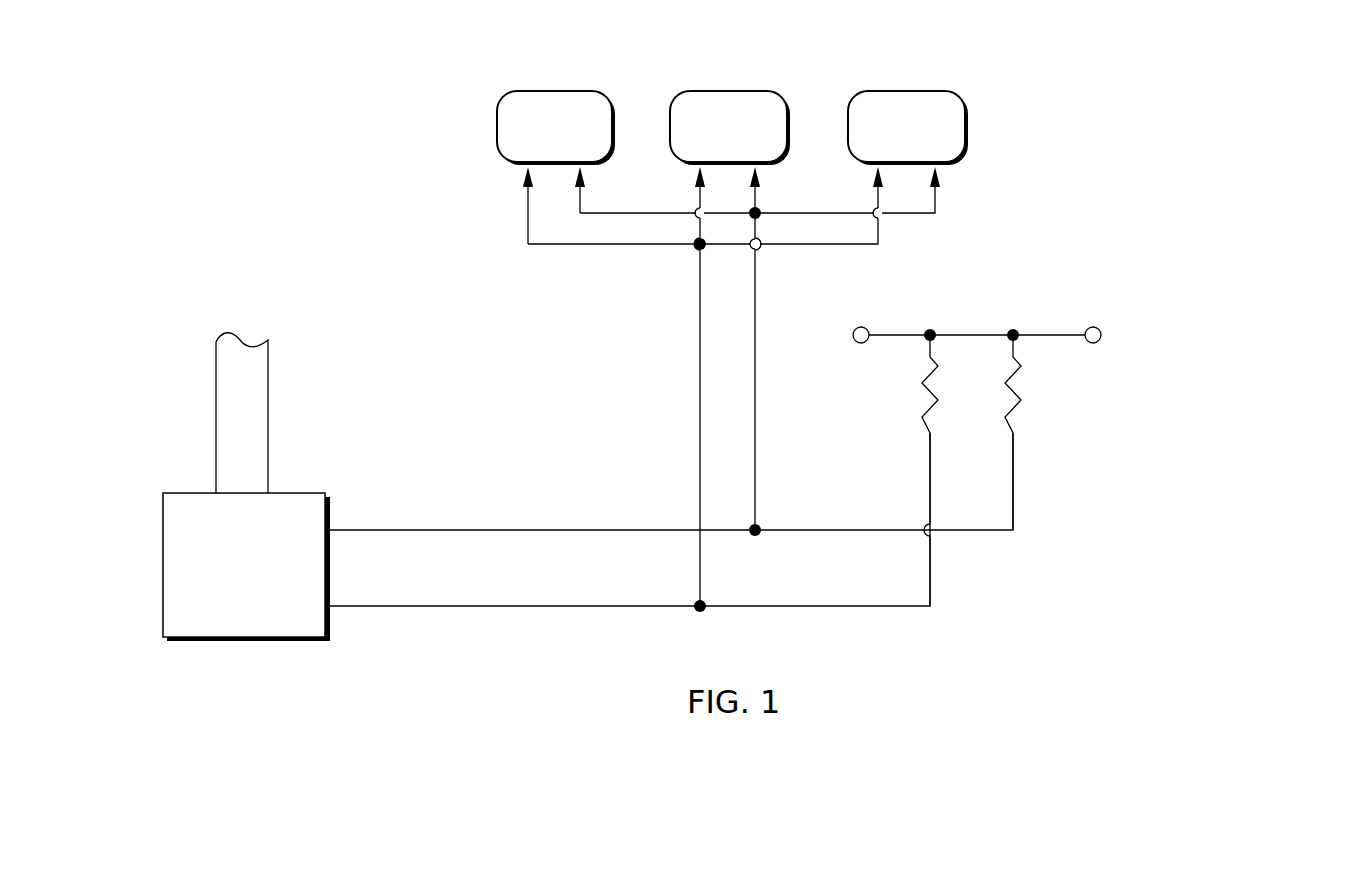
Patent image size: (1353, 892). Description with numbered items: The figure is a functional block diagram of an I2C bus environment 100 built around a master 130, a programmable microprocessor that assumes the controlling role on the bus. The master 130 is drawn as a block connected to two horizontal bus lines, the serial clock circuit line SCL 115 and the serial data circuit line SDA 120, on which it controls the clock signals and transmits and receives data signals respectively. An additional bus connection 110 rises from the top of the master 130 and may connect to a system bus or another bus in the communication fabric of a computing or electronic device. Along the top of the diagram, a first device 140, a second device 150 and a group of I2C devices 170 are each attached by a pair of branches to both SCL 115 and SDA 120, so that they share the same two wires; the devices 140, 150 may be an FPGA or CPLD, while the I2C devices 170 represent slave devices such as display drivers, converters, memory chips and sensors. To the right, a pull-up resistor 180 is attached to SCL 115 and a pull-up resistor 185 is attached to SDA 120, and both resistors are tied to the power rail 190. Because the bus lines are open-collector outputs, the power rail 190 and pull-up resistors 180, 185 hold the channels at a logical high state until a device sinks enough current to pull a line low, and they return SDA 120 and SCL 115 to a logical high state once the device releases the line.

The I2C bus environment 100 is at (1184, 122).
The additional bus connection 110 is at (216, 360).
The serial clock circuit line (SCL) 115 is at (446, 530).
The serial data circuit line (SDA) 120 is at (447, 608).
The master 130 is at (163, 578).
The device 140 is at (727, 90).
The device 150 is at (906, 90).
The I2C devices 170 is at (556, 90).
The pull-up resistor 180 is at (1022, 378).
The pull-up resistor 185 is at (925, 392).
The power rail 190 is at (970, 333).